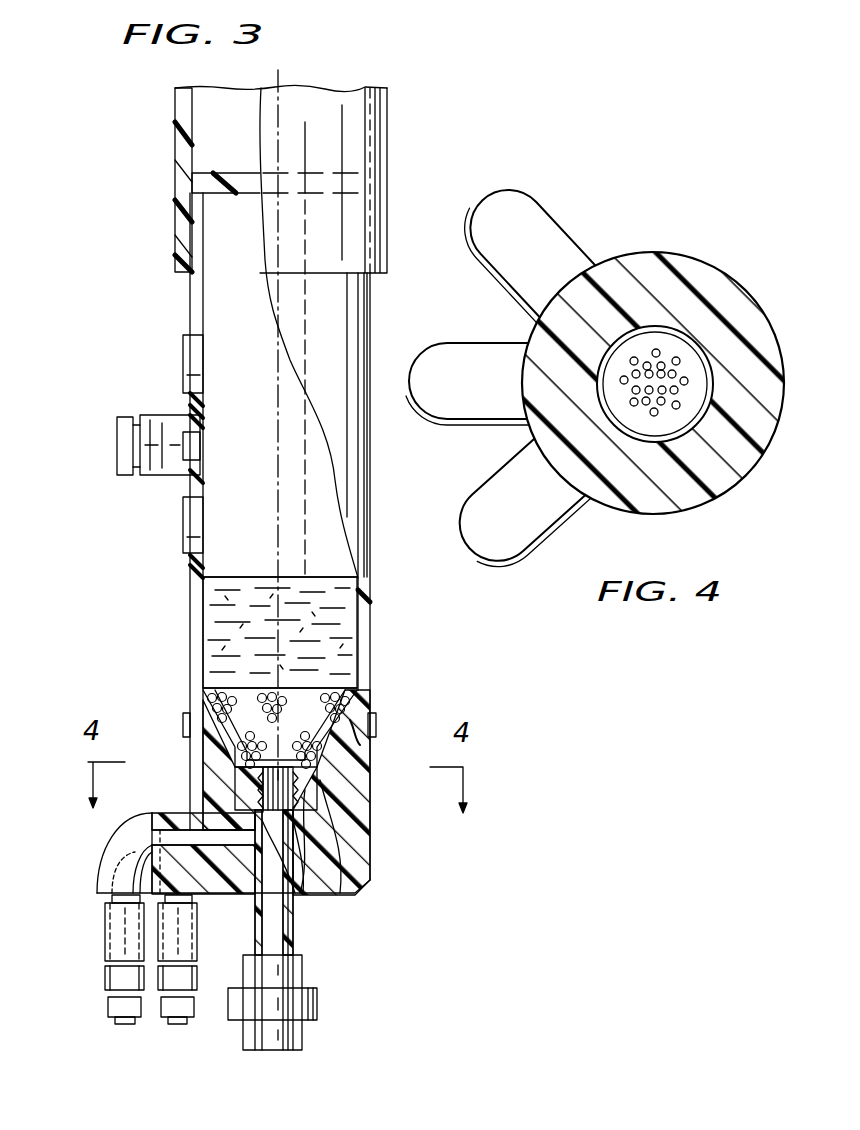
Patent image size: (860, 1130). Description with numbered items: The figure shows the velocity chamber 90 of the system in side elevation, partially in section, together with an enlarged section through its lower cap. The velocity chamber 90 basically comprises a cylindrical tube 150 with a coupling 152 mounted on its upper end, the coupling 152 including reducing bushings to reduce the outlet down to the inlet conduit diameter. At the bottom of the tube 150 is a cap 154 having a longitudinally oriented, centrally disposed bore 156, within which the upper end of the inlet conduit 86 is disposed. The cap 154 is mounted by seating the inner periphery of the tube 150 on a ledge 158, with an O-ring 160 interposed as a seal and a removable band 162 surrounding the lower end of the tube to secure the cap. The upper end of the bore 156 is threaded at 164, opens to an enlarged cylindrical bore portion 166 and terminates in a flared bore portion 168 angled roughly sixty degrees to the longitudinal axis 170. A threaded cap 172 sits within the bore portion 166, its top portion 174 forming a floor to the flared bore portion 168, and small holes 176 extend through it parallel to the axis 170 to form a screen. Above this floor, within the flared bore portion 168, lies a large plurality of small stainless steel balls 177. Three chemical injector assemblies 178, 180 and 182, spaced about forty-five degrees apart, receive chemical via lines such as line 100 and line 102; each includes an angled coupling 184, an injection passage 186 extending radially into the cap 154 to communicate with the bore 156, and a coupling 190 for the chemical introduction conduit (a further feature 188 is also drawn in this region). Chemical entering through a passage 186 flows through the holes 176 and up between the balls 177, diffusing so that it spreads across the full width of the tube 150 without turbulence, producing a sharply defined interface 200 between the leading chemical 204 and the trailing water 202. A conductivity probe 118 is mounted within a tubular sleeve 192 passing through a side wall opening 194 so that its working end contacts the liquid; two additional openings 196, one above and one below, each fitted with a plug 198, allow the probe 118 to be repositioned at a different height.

In FIG. 3, the velocity chamber 90 is at (392, 147).
In FIG. 3, the coupling 152 is at (177, 223).
In FIG. 3, the cylindrical tube 150 is at (197, 613).
In FIG. 3, the water 202 is at (307, 471).
In FIG. 3, the longitudinal axis 170 is at (277, 546).
In FIG. 3, the plug 198 is at (185, 345).
In FIG. 3, the openings 196 is at (190, 402).
In FIG. 3, the conductivity probe 118 is at (120, 455).
In FIG. 3, the tubular sleeve 192 is at (168, 478).
In FIG. 3, the side wall opening 194 is at (202, 483).
In FIG. 3, the chemical 204 is at (335, 617).
In FIG. 3, the interface 200 is at (333, 579).
In FIG. 3, the cap 154 is at (365, 860).
In FIG. 4, the cap 154 is at (720, 292).
In FIG. 3, the O-ring 160 is at (367, 712).
In FIG. 3, the flared bore portion 168 is at (358, 707).
In FIG. 3, the removable band 162 is at (376, 733).
In FIG. 3, the ledge 158 is at (357, 740).
In FIG. 3, the stainless steel balls 177 is at (300, 733).
In FIG. 3, the threaded cap 172 is at (245, 795).
In FIG. 3, the top portion 174 is at (237, 770).
In FIG. 4, the top portion 174 is at (650, 340).
In FIG. 3, the enlarged cylindrical bore portion 166 is at (367, 787).
In FIG. 3, the threaded portion 164 is at (367, 830).
In FIG. 3, the angled coupling 184 is at (118, 846).
In FIG. 3, the injection passage 186 is at (237, 840).
In FIG. 3, the elbow bore 188 is at (100, 890).
In FIG. 3, the chemical injector assembly 180 is at (112, 928).
In FIG. 4, the chemical injector assembly 180 is at (485, 352).
In FIG. 3, the coupling 190 is at (108, 975).
In FIG. 3, the line 100 is at (120, 1022).
In FIG. 3, the chemical injector assembly 182 is at (187, 948).
In FIG. 4, the chemical injector assembly 182 is at (545, 225).
In FIG. 3, the line 102 is at (172, 1020).
In FIG. 3, the inlet conduit 86 is at (292, 935).
In FIG. 3, the holes 176 is at (313, 897).
In FIG. 4, the holes 176 is at (680, 362).
In FIG. 3, the bore 156 is at (297, 896).
In FIG. 4, the chemical injector assembly 178 is at (497, 500).